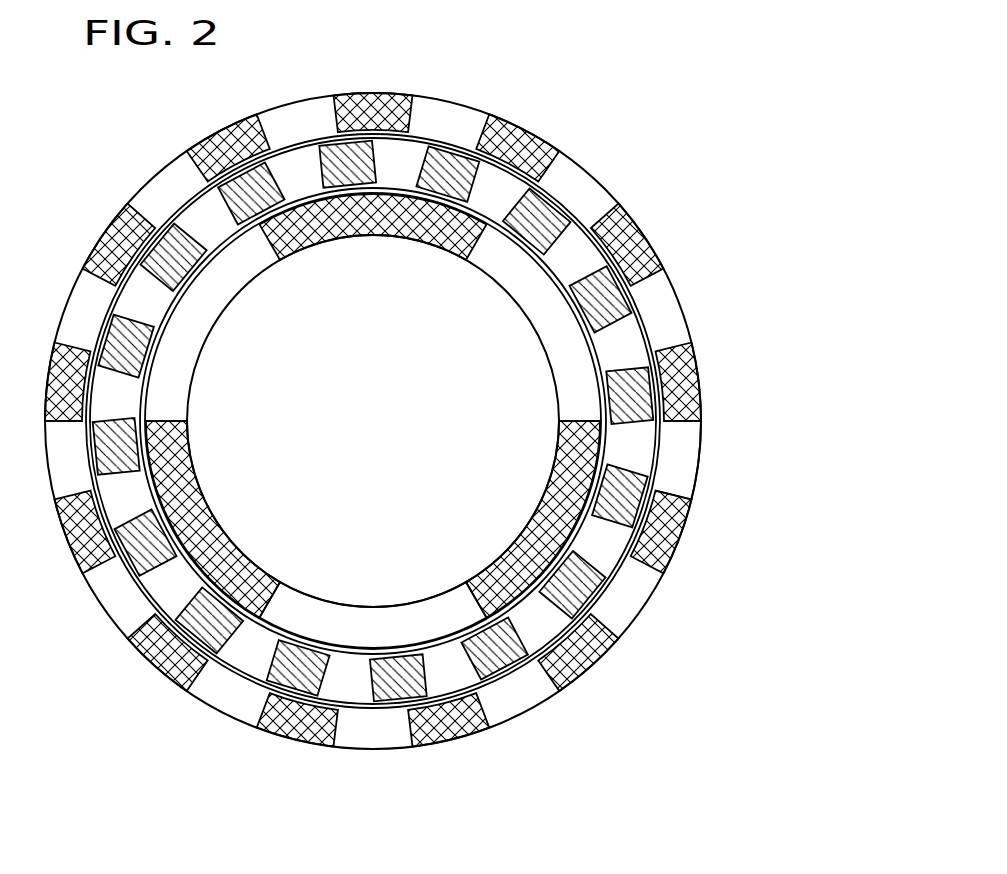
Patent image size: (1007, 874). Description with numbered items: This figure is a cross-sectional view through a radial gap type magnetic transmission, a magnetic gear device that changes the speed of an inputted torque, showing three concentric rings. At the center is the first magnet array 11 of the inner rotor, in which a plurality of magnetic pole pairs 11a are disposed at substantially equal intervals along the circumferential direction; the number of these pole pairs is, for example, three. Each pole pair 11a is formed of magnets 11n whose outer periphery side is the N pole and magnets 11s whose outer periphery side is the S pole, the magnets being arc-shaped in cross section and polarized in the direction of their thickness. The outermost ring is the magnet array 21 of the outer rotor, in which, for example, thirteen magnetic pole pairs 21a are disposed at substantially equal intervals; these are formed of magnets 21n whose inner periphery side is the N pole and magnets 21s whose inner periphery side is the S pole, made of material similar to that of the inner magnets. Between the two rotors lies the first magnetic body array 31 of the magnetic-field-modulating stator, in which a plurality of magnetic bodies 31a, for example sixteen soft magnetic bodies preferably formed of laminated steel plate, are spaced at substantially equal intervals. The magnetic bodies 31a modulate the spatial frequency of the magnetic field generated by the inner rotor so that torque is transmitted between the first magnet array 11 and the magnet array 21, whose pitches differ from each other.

The first magnet array 11 is at (306, 529).
The magnetic pole pairs 11a is at (373, 529).
The magnets 11n is at (512, 583).
The magnets 11s is at (435, 632).
The magnet array 21 is at (468, 387).
The magnetic pole pairs 21a is at (468, 420).
The magnets 21n is at (692, 392).
The magnets 21s is at (680, 453).
The first magnetic body array 31 is at (429, 421).
The magnetic bodies 31a is at (615, 303).